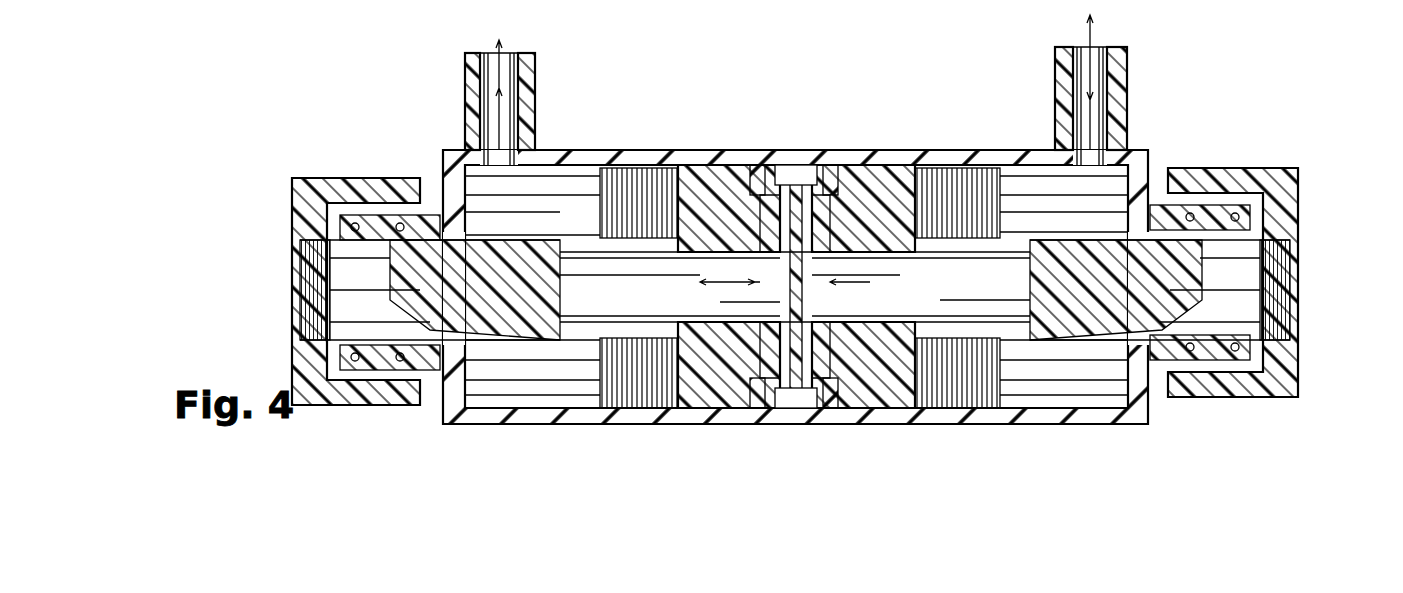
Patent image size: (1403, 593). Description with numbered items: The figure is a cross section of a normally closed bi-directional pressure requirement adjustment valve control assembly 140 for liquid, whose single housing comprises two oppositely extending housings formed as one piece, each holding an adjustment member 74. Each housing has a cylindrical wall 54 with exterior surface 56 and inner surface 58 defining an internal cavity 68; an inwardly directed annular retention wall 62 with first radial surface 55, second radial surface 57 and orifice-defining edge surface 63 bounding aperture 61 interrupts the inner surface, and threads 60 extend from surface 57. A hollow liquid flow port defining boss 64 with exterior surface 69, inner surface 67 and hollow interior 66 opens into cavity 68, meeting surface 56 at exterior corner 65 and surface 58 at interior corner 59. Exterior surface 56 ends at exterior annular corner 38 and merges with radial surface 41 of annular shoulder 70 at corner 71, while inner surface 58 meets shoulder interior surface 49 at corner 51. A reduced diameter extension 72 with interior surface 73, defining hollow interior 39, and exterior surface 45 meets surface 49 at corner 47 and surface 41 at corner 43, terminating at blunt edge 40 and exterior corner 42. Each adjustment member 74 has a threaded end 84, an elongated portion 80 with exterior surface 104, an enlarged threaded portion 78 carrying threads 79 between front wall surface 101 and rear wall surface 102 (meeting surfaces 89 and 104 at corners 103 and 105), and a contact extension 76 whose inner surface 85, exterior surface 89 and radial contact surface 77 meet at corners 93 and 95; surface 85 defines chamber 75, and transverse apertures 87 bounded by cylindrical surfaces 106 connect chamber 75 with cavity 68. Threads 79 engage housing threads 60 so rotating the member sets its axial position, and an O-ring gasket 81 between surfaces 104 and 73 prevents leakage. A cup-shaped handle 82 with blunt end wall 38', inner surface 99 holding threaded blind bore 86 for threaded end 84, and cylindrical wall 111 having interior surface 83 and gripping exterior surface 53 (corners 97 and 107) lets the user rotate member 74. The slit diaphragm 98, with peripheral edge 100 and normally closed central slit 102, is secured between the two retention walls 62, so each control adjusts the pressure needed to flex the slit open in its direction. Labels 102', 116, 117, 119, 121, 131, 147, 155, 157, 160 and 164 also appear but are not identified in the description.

The exterior annular corner 38 is at (787, 286).
The blunt end wall 38' is at (785, 316).
The hollow cylindrical interior 39 is at (300, 348).
The blunt edge 40 is at (292, 362).
The radial surface of annular shoulder 41 is at (430, 420).
The annular exterior corner 42 is at (300, 368).
The annular exterior corner 43 is at (420, 410).
The exterior surface of extension 45 is at (340, 405).
The annular corner 47 is at (415, 215).
The shoulder interior surface 49 is at (395, 215).
The annular interior corner 51 is at (465, 160).
The cylindrical exterior surface of handle 53 is at (320, 405).
The annular housing wall 54 is at (768, 165).
The first radial surface 55 is at (795, 165).
The cylindrical exterior surface 56 is at (621, 150).
The second radial surface 57 is at (760, 415).
The housing inner surface 58 is at (557, 174).
The interior annular corner 59 is at (500, 200).
The housing threads 60 is at (645, 165).
The aperture 61 is at (840, 165).
The annular retention wall 62 is at (752, 424).
The orifice-defining edge surface 63 is at (700, 165).
The liquid flow port defining boss 64 is at (534, 80).
The exterior annular corner 65 is at (548, 175).
The hollow interior of boss 66 is at (518, 48).
The boss inner surface 67 is at (490, 50).
The internal cavity 68 is at (509, 231).
The boss exterior surface 69 is at (476, 55).
The annular shoulder 70 is at (415, 430).
The exterior annular corner 71 is at (440, 424).
The stepped cylindrical extension 72 is at (355, 405).
The interior surface of extension 73 is at (330, 175).
The adjustment member 74 is at (490, 424).
The hollow portion 75 is at (669, 303).
The contact extension 76 is at (710, 424).
The radial contact surface 77 is at (780, 292).
The enlarged threaded portion 78 is at (665, 424).
The adjustment member threads 79 is at (718, 165).
The elongated portion 80 is at (518, 424).
The gasket 81 is at (335, 180).
The handle 82 is at (322, 184).
The cylindrical interior surface of handle wall 83 is at (335, 405).
The threaded end 84 is at (300, 262).
The cylindrical inner surface 85 is at (786, 165).
The threaded blind bore 86 is at (300, 338).
The transverse apertures 87 is at (655, 424).
The exterior surface of contact extension 89 is at (750, 424).
The annular corner 93 is at (720, 296).
The annular exterior corner 95 is at (700, 424).
The annular corner 97 is at (300, 405).
The slit diaphragm 98 is at (808, 165).
The inner surface of handle end wall 99 is at (292, 220).
The peripheral edge 100 is at (808, 415).
The front wall surface 101 is at (755, 165).
The rear wall surface 102 is at (874, 295).
The passage 102' is at (757, 451).
The annular exterior corner 103 is at (752, 165).
The exterior surface of elongated portion 104 is at (505, 424).
The annular exterior corner 105 is at (690, 165).
The cylindrical aperture surface 106 is at (944, 165).
The annular corner 107 is at (460, 150).
The cylindrical handle wall 111 is at (292, 200).
The plate 116 is at (790, 10).
The plate 117 is at (798, 10).
The plate 119 is at (795, 60).
The seal 121 is at (720, 150).
The plate 131 is at (810, 30).
The bi-directional pressure requirement adjustment valve control assembly 140 is at (430, 68).
The passage 147 is at (640, 40).
The seal 155 is at (345, 215).
The seal 157 is at (410, 405).
The passage 160 is at (835, 2).
The passage 164 is at (670, 150).